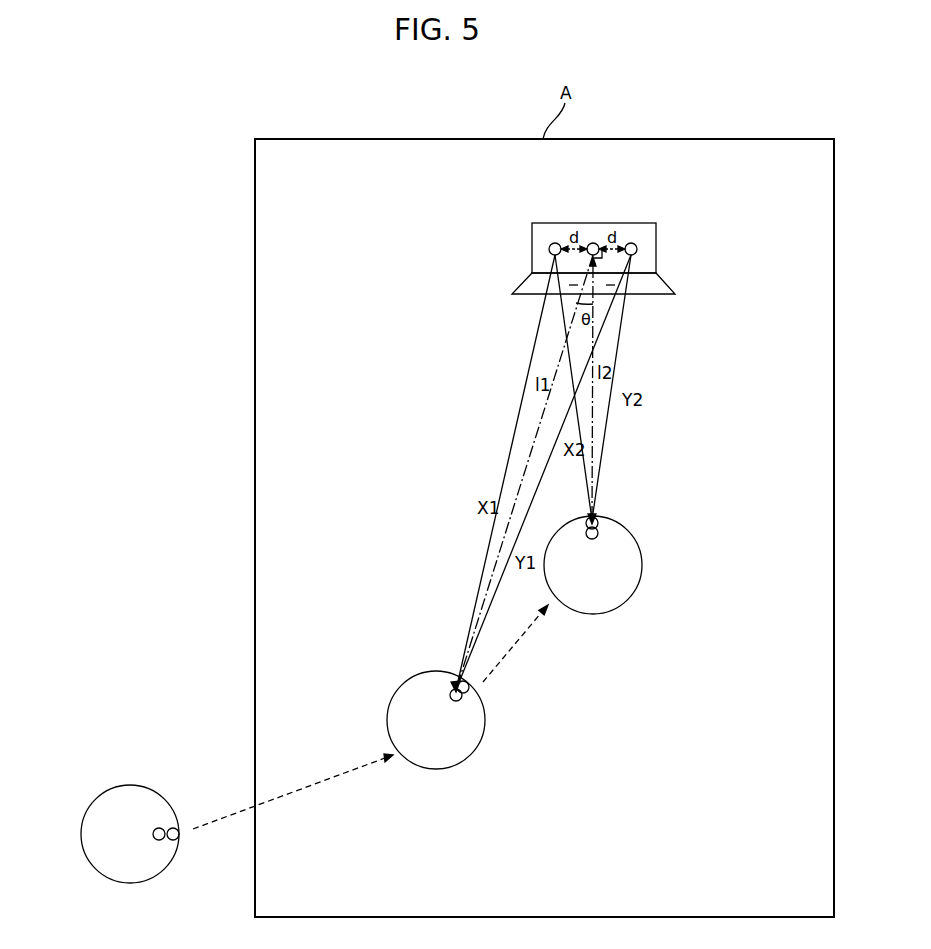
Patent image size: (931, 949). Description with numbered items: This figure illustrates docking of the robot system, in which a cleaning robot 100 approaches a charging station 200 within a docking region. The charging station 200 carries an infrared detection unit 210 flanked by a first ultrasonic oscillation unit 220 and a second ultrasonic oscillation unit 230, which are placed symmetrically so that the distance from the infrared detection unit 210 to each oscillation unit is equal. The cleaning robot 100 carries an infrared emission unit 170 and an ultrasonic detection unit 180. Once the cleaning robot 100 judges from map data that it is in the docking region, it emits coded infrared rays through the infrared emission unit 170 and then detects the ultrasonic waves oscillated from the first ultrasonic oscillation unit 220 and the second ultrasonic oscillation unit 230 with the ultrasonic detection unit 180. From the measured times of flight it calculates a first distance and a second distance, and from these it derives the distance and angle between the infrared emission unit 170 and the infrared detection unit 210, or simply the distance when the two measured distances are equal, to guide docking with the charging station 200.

The cleaning robot 100 is at (97, 807).
The infrared emission unit 170 is at (175, 828).
The ultrasonic detection unit 180 is at (158, 828).
The charging station 200 is at (656, 247).
The infrared detection unit 210 is at (593, 243).
The first ultrasonic oscillation unit 220 is at (555, 243).
The second ultrasonic oscillation unit 230 is at (631, 243).